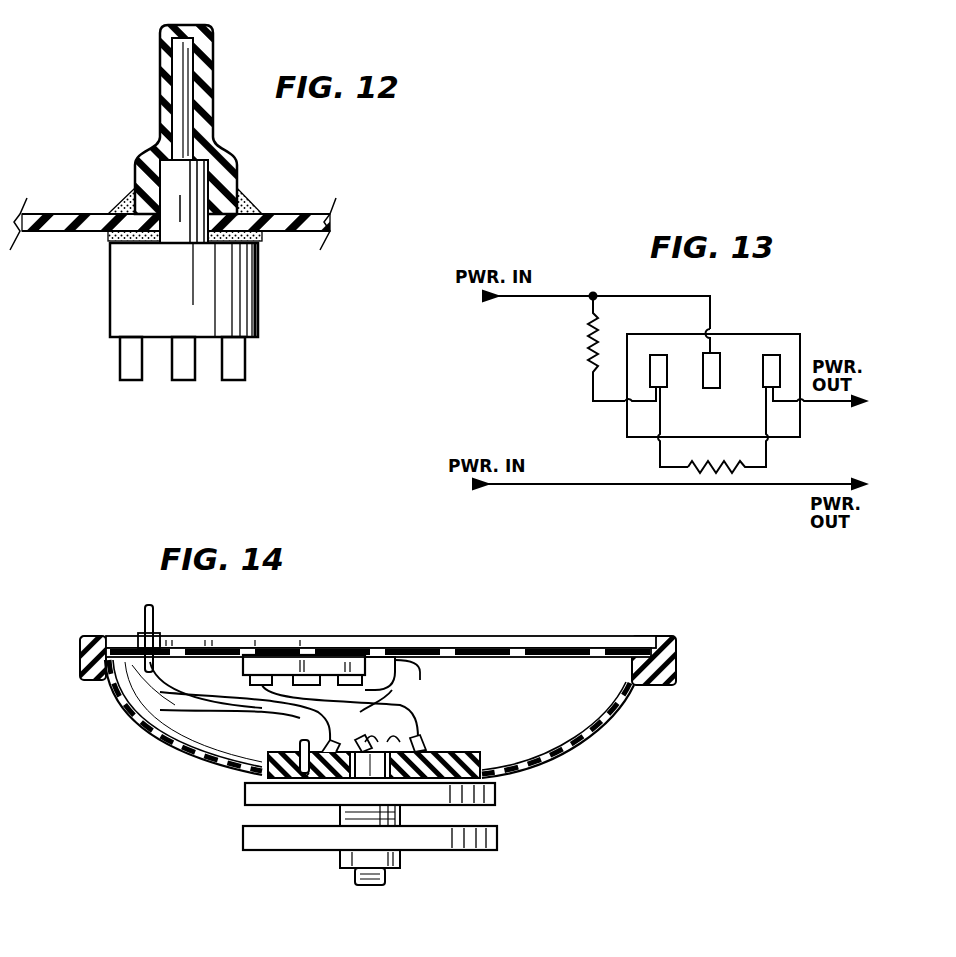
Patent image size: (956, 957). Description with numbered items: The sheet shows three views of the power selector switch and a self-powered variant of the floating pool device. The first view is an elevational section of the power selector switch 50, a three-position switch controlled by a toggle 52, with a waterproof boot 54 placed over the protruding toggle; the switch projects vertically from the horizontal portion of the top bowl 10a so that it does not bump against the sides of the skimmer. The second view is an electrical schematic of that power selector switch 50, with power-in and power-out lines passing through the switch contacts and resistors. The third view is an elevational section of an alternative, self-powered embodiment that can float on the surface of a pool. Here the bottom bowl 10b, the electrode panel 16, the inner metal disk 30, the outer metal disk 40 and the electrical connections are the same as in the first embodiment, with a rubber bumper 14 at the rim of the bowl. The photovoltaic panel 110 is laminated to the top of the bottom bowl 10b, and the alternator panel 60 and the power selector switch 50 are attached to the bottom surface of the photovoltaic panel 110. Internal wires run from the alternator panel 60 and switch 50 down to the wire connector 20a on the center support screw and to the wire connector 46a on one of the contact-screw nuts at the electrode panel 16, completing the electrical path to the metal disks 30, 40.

In FIG. 12, the top bowl 10a is at (62, 228).
In FIG. 14, the bottom bowl 10b is at (605, 722).
In FIG. 14, the rubber bumper 14 is at (676, 643).
In FIG. 14, the electrode panel 16 is at (470, 752).
In FIG. 14, the wire connector 20a is at (418, 738).
In FIG. 14, the inner metal disk 30 is at (245, 793).
In FIG. 14, the outer metal disk 40 is at (243, 840).
In FIG. 14, the wire connector 46a is at (330, 742).
In FIG. 12, the power selector switch 50 is at (238, 300).
In FIG. 14, the power selector switch 50 is at (147, 612).
In FIG. 12, the toggle 52 is at (178, 125).
In FIG. 12, the waterproof boot 54 is at (164, 80).
In FIG. 14, the alternator panel 60 is at (327, 655).
In FIG. 14, the photovoltaic panel 110 is at (540, 650).